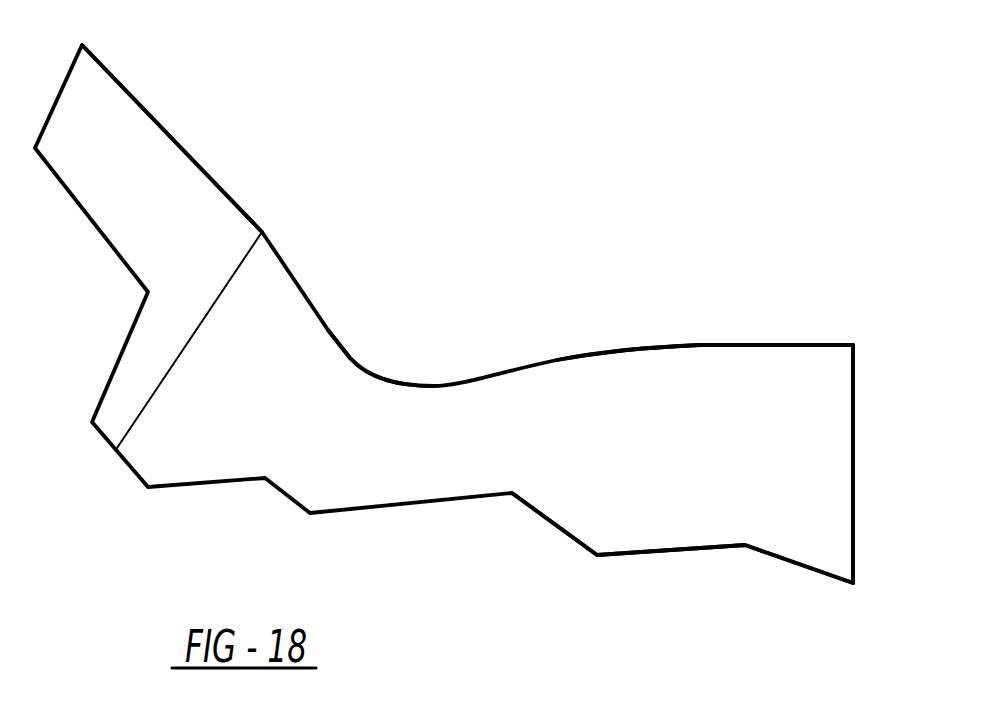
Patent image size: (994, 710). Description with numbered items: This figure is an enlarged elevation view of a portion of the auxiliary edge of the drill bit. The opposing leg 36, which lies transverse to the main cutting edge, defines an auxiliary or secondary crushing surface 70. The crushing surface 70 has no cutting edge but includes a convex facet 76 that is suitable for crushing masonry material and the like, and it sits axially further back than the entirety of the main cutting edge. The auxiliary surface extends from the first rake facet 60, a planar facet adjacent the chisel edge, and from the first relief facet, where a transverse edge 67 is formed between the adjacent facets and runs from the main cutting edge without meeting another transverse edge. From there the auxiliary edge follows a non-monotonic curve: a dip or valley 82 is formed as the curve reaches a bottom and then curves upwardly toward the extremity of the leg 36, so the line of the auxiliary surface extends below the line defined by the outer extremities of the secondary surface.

The first rake facet 60 is at (140, 170).
The transverse edge 67 is at (128, 90).
The dip or valley 82 is at (387, 377).
The auxiliary crushing surface 70 is at (698, 345).
The leg 36 is at (833, 438).
The convex facet 76 is at (655, 393).